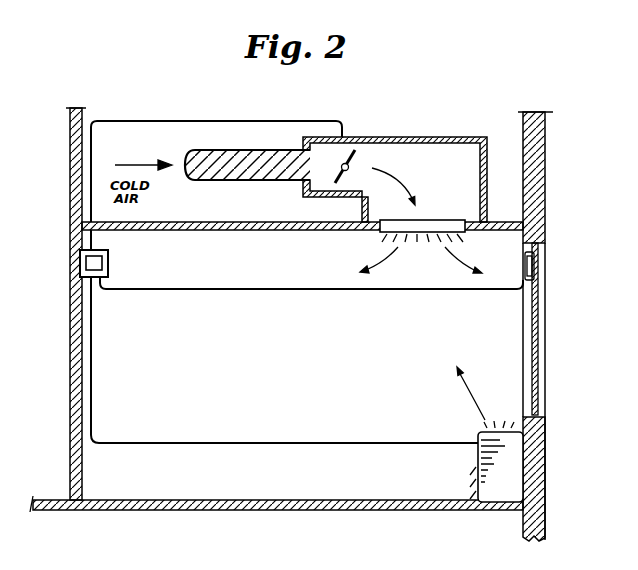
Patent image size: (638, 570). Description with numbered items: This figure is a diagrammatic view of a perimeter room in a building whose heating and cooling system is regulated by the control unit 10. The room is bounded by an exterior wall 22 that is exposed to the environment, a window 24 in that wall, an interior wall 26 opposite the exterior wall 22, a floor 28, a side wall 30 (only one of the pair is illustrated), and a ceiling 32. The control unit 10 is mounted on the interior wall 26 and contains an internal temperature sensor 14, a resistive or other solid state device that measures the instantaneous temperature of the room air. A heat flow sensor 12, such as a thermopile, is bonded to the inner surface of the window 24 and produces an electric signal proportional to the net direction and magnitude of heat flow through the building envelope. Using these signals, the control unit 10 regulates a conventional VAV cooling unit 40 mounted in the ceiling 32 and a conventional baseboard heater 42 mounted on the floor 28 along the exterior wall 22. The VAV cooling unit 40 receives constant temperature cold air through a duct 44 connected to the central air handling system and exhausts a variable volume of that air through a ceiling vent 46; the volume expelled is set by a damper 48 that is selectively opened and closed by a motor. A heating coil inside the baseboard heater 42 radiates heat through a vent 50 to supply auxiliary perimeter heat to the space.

The control unit 10 is at (124, 251).
The heat flow sensor 12 is at (540, 263).
The temperature sensor 14 is at (100, 263).
The exterior wall 22 is at (548, 147).
The window 24 is at (538, 335).
The interior wall 26 is at (72, 320).
The floor 28 is at (217, 512).
The side wall 30 is at (307, 282).
The ceiling 32 is at (221, 231).
The VAV cooling unit 40 is at (474, 128).
The baseboard heater 42 is at (508, 460).
The duct 44 is at (234, 163).
The ceiling vent 46 is at (421, 235).
The damper 48 is at (356, 157).
The vent 50 is at (503, 424).